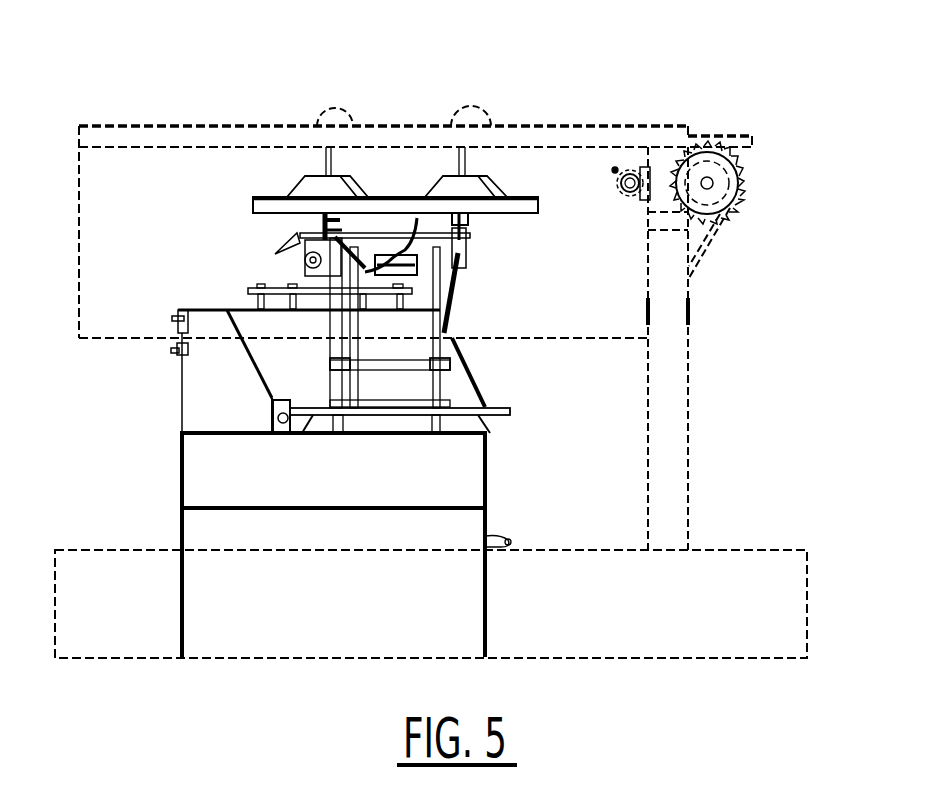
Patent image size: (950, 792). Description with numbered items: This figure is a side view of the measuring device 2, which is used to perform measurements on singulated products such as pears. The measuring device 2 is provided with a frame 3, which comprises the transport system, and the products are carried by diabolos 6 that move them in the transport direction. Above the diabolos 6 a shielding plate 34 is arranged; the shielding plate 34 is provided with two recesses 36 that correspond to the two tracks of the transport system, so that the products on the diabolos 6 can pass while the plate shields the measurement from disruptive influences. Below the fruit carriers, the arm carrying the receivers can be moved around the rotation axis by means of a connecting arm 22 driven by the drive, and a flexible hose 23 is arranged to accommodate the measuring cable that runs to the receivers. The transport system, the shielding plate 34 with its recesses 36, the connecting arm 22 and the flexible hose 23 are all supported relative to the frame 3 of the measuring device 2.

The measuring device 2 is at (652, 95).
The frame 3 is at (672, 468).
The diabolos 6 is at (490, 108).
The connecting arm 22 is at (432, 283).
The flexible hose 23 is at (450, 300).
The shielding plate 34 is at (528, 200).
The recesses 36 is at (437, 183).